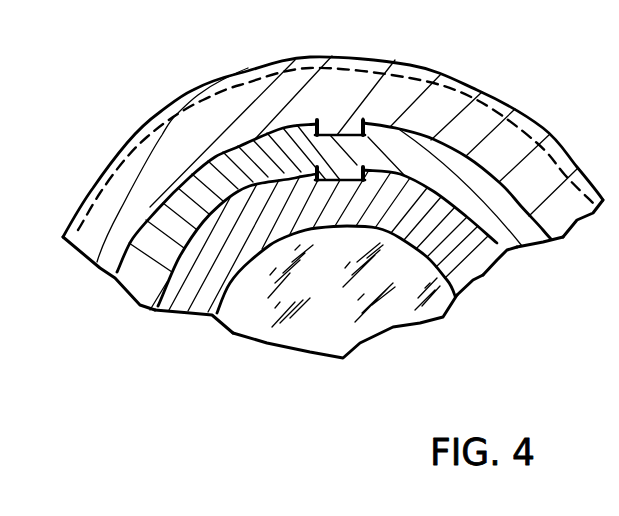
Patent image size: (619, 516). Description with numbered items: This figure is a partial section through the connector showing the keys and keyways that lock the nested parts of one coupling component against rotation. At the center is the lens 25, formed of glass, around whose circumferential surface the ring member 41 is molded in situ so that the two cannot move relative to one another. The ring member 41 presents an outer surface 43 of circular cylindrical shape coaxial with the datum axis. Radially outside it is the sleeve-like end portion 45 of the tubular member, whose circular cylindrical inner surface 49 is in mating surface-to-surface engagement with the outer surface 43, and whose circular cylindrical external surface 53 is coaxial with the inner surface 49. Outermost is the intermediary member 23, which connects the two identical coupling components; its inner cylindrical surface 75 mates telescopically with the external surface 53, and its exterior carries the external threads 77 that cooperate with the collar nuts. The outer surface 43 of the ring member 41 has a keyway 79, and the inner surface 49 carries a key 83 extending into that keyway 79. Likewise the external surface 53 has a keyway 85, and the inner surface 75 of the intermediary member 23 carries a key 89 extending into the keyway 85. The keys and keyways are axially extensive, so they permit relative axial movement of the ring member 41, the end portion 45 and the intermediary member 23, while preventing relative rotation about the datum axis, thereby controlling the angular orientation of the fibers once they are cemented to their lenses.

The intermediary member 23 is at (247, 90).
The external threads 77 is at (367, 63).
The keyway 79 is at (312, 170).
The key 89 is at (347, 128).
The keyway 85 is at (367, 125).
The key 83 is at (347, 173).
The ring member 41 is at (477, 286).
The lens 25 is at (347, 334).
The inner cylindrical surface 75 is at (116, 276).
The outer surface 43 is at (157, 310).
The inner surface 49 is at (515, 252).
The external surface 53 is at (527, 241).
The end portion 45 is at (549, 240).